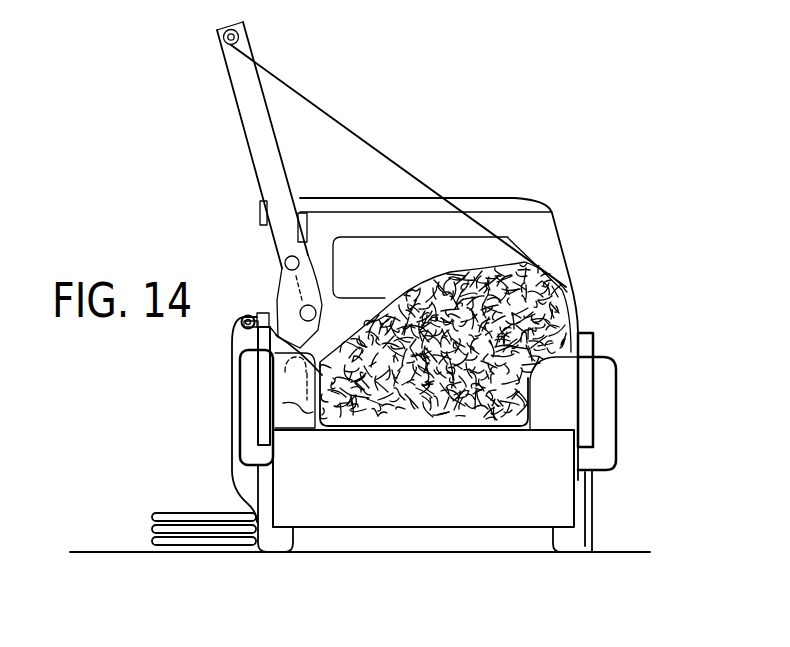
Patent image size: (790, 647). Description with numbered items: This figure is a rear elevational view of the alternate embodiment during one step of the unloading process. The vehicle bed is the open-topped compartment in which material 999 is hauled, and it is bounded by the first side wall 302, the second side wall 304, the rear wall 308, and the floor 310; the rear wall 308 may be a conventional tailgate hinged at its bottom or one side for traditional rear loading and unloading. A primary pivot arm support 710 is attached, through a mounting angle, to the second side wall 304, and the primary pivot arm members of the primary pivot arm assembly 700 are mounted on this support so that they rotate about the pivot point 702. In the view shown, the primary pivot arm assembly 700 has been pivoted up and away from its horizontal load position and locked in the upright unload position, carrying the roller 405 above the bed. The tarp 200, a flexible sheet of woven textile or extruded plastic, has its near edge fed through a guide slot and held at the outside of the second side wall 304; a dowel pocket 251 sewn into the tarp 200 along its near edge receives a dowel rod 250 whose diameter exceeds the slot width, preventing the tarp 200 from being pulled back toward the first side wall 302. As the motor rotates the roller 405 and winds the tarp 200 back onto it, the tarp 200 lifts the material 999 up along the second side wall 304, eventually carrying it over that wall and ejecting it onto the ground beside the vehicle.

The roller 405 is at (225, 29).
The primary pivot arm assembly 700 is at (257, 156).
The tarp 200 is at (398, 166).
The material 999 is at (448, 283).
The pivot point 702 is at (301, 305).
The dowel rod 250 is at (241, 323).
The dowel pocket 251 is at (246, 330).
The second side wall 304 is at (283, 395).
The primary pivot arm support 710 is at (262, 407).
The first side wall 302 is at (594, 393).
The rear wall 308 is at (448, 489).
The floor 310 is at (553, 425).